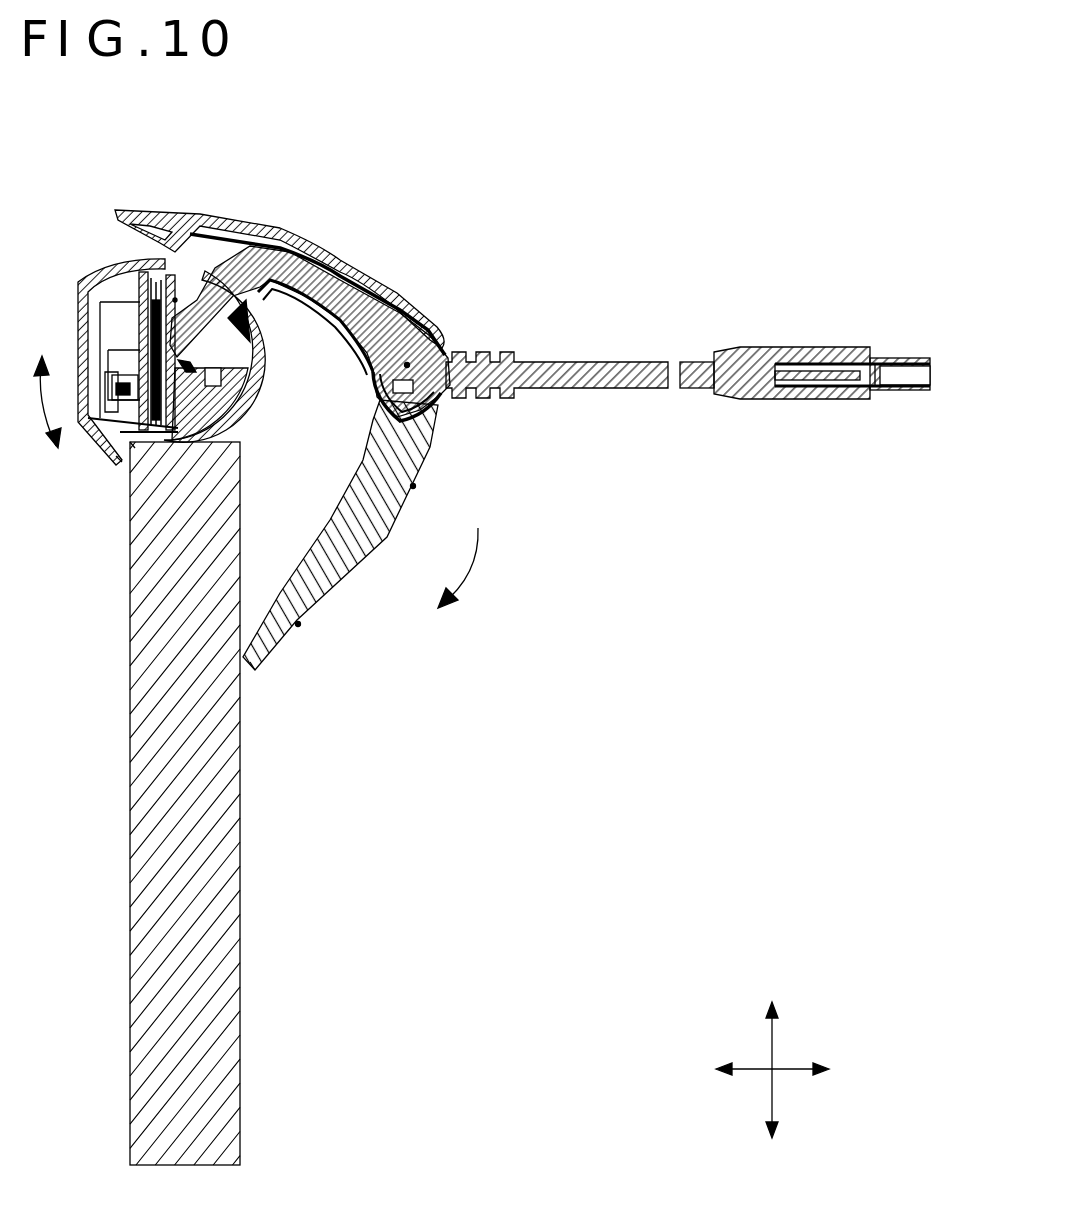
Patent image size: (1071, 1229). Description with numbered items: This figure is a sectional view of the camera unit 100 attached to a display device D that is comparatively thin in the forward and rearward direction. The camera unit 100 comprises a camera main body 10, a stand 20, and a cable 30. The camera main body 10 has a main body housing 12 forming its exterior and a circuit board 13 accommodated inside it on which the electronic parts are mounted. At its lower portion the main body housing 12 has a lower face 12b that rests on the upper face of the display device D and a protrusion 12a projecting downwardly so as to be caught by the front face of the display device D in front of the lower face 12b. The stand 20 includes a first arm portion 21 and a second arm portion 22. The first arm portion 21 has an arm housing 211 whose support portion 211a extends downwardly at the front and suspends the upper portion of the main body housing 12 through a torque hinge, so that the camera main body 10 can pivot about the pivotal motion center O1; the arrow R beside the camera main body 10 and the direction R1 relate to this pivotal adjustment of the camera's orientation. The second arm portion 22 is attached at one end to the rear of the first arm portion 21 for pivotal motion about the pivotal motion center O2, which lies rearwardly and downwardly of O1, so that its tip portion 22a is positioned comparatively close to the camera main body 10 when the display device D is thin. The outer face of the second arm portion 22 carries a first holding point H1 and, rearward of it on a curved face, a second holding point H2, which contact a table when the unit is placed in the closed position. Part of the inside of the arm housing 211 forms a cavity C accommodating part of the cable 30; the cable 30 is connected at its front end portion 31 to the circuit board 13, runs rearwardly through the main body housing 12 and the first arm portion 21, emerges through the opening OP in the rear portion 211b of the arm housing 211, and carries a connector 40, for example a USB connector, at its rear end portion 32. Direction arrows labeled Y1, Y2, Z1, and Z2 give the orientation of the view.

The camera main body 10 is at (76, 303).
The main body housing 12 is at (88, 272).
The protrusion 12a is at (117, 460).
The lower face 12b is at (132, 452).
The circuit board 13 is at (180, 397).
The stand 20 is at (406, 318).
The first arm portion 21 is at (334, 254).
The arm housing 211 is at (185, 245).
The support portion 211a is at (258, 305).
The rear portion 211b is at (441, 322).
The second arm portion 22 is at (373, 540).
The tip portion 22a is at (260, 677).
The cable 30 is at (592, 365).
The front end portion 31 is at (218, 317).
The rear end portion 32 is at (800, 350).
The connector 40 is at (918, 358).
The camera unit 100 is at (280, 232).
The cavity C is at (419, 318).
The opening OP is at (444, 352).
The pivotal motion center O1 is at (175, 300).
The pivotal motion center O2 is at (405, 367).
The rotation direction R is at (38, 402).
The R1 direction R1 is at (473, 568).
The first holding point H1 is at (298, 624).
The second holding point H2 is at (414, 486).
The display device D is at (126, 656).
The Y1 direction Y1 is at (755, 1067).
The Y2 direction Y2 is at (837, 1067).
The Z1 direction Z1 is at (773, 1045).
The Z2 direction Z2 is at (773, 1151).